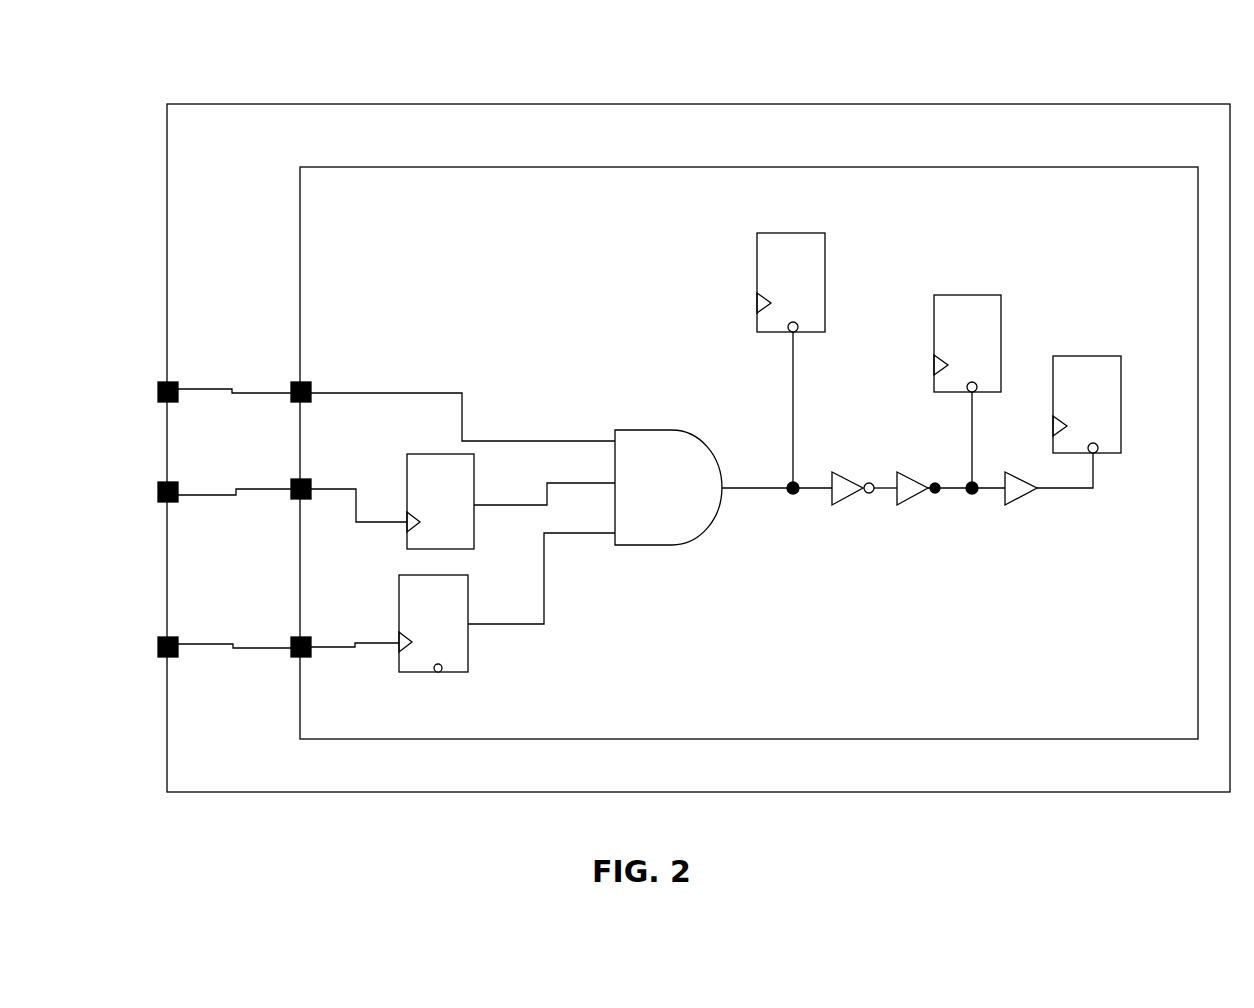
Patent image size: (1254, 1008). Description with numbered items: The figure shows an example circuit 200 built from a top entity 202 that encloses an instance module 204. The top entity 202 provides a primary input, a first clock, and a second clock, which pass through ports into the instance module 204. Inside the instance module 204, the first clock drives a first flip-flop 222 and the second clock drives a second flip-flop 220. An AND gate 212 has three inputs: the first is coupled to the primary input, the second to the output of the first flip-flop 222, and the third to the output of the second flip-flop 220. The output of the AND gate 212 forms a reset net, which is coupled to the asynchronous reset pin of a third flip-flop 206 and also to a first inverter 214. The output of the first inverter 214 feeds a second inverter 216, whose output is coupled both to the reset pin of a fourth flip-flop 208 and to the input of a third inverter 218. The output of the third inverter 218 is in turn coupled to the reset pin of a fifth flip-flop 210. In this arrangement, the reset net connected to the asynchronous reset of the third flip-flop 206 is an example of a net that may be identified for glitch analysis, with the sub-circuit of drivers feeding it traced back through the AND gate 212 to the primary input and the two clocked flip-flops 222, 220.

The circuit 200 is at (84, 138).
The top entity 202 is at (968, 108).
The instance module 204 is at (1058, 167).
The flip-flop FF1 206 is at (792, 233).
The flip-flop FF2 208 is at (975, 295).
The flip-flop FF3 210 is at (1088, 357).
The AND gate 212 is at (665, 435).
The first inverter 214 is at (838, 505).
The second inverter 216 is at (918, 505).
The third inverter 218 is at (1030, 493).
The flip-flop FFB 220 is at (470, 656).
The flip-flop FFA 222 is at (410, 455).